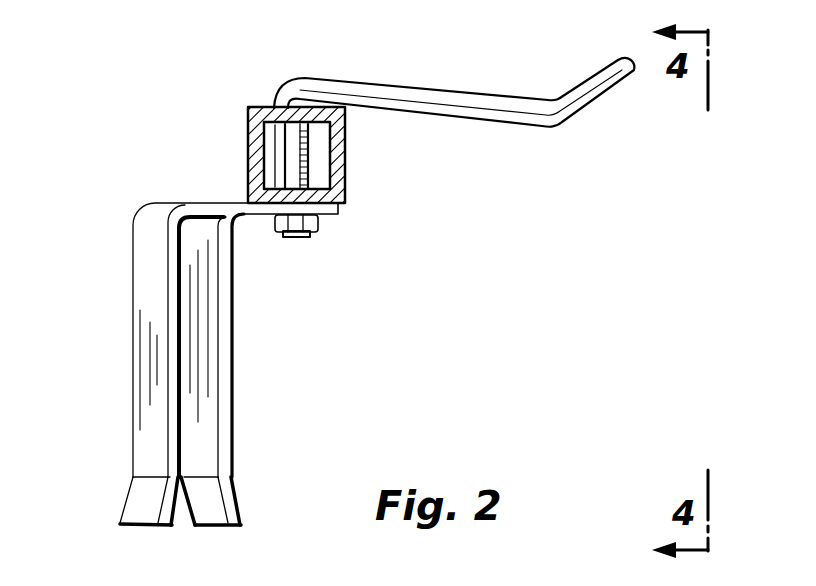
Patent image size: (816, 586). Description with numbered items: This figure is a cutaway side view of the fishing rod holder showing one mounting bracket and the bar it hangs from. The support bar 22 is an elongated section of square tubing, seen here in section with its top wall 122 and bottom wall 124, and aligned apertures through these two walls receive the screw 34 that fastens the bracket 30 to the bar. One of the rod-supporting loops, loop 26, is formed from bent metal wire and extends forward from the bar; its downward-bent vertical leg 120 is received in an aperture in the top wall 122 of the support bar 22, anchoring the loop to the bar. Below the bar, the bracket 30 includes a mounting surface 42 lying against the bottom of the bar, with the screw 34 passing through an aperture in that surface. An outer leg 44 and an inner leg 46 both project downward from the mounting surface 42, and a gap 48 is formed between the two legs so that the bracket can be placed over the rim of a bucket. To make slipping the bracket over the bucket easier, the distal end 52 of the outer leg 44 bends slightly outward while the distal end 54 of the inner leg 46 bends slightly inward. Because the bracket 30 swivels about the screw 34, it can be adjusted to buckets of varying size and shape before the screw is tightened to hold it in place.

The support bar 22 is at (338, 165).
The loop 26 is at (435, 100).
The bracket 30 is at (197, 338).
The screw 34 is at (308, 146).
The mounting surface 42 is at (218, 203).
The outer leg 44 is at (145, 342).
The inner leg 46 is at (213, 387).
The gap 48 is at (193, 312).
The distal end of outer leg 52 is at (137, 497).
The distal end of inner leg 54 is at (235, 493).
The vertical leg 120 is at (272, 152).
The top wall 122 is at (250, 107).
The bottom wall 124 is at (338, 205).